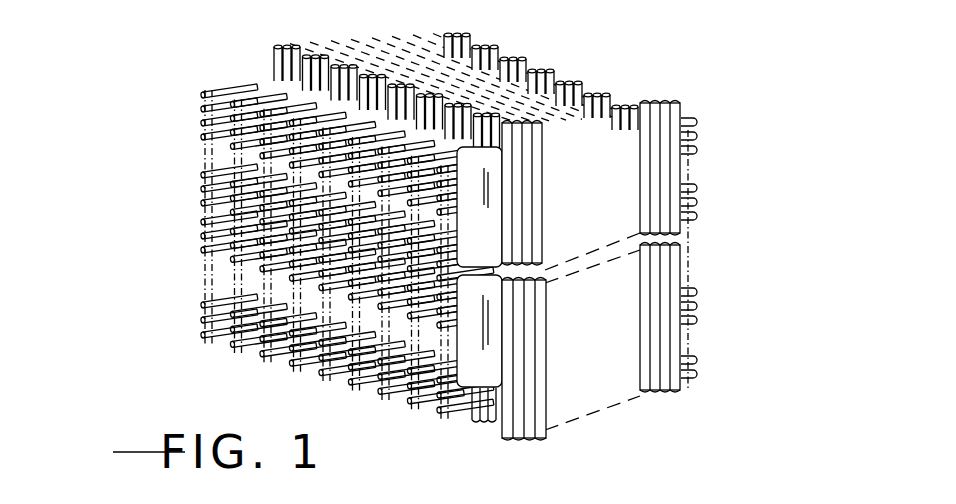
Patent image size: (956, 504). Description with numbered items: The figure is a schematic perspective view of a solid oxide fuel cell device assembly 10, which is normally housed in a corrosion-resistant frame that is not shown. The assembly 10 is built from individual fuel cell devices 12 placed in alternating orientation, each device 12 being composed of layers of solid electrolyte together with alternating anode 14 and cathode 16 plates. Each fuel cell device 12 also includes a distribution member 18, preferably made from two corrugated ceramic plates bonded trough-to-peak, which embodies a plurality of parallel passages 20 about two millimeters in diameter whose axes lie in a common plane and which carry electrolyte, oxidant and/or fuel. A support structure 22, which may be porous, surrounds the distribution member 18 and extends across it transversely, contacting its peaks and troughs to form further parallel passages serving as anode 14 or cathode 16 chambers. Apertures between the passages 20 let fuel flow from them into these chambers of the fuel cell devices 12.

The SOFC device assembly 10 is at (172, 203).
The fuel cell device 12 is at (672, 158).
The anode 14 is at (303, 378).
The cathode 16 is at (348, 370).
The distribution member 18 is at (432, 362).
The passages 20 is at (205, 335).
The support structure 22 is at (270, 85).